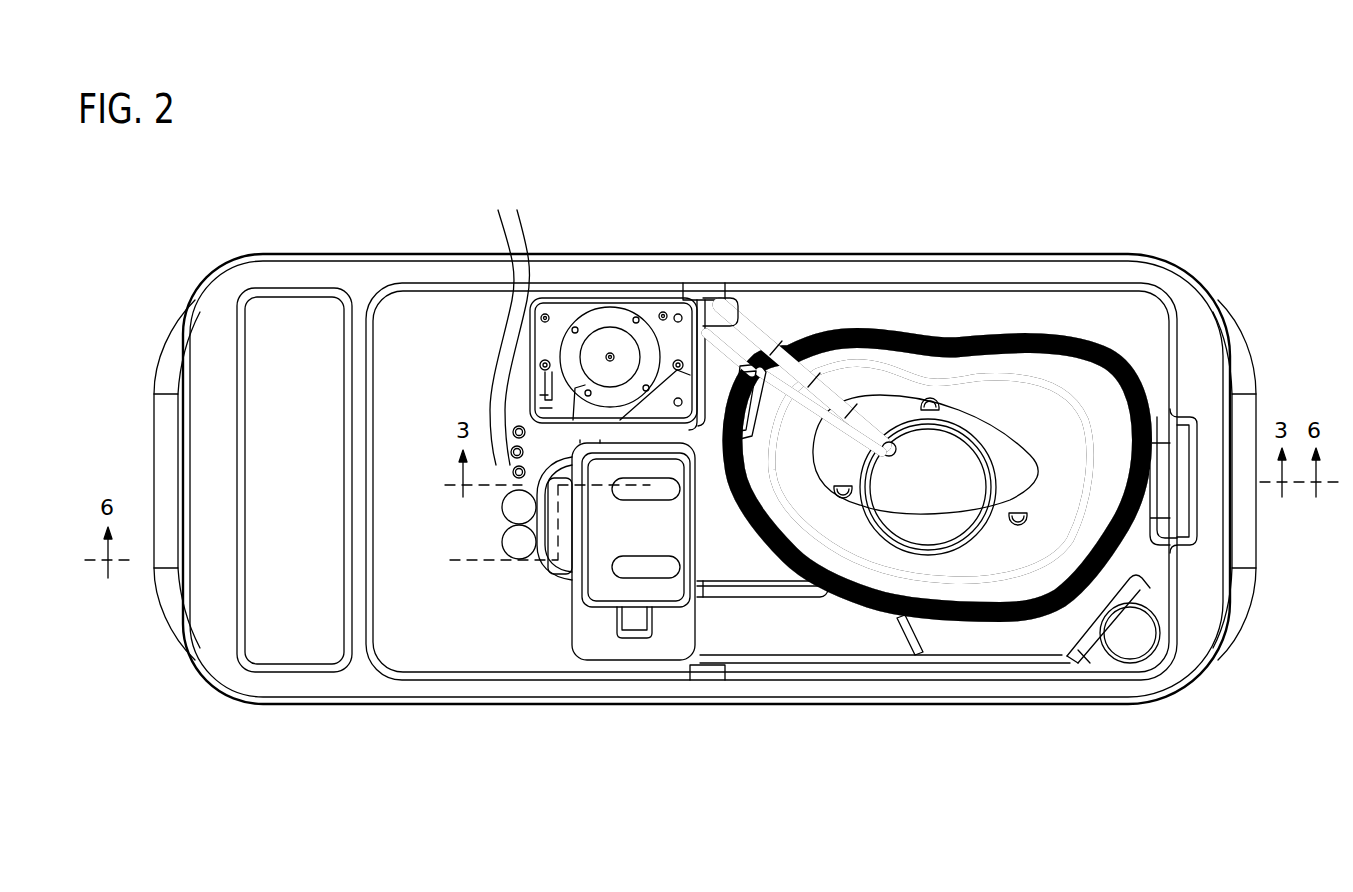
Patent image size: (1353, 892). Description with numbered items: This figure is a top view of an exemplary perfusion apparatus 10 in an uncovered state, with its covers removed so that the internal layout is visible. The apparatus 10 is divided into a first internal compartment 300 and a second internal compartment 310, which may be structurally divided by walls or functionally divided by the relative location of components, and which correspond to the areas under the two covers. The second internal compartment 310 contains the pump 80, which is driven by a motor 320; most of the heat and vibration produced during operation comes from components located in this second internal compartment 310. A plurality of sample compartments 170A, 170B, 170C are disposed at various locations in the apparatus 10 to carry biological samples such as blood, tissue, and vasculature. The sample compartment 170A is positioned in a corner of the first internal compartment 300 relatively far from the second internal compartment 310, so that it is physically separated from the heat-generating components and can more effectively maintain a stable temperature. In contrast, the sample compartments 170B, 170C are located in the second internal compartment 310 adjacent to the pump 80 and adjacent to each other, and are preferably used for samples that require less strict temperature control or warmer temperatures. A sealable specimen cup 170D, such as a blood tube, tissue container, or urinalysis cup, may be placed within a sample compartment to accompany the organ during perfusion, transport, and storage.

The apparatus 10 is at (298, 178).
The first internal compartment 300 is at (1163, 264).
The second internal compartment 310 is at (437, 272).
The pump 80 is at (613, 314).
The motor 320 is at (612, 335).
The sample compartment 170A is at (1093, 640).
The sample compartment 170B is at (488, 338).
The sample compartment 170C is at (519, 507).
The specimen cup 170D is at (1132, 640).